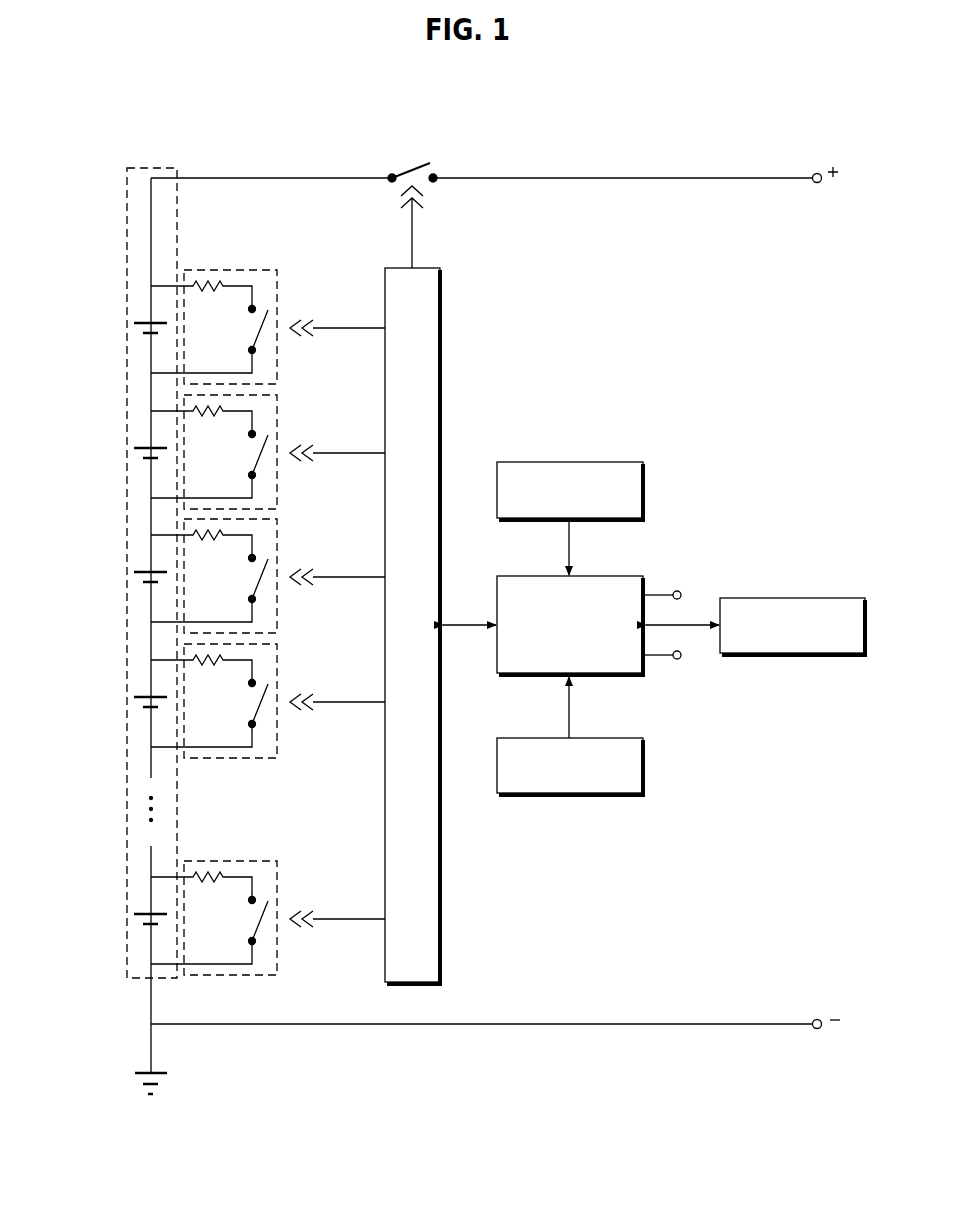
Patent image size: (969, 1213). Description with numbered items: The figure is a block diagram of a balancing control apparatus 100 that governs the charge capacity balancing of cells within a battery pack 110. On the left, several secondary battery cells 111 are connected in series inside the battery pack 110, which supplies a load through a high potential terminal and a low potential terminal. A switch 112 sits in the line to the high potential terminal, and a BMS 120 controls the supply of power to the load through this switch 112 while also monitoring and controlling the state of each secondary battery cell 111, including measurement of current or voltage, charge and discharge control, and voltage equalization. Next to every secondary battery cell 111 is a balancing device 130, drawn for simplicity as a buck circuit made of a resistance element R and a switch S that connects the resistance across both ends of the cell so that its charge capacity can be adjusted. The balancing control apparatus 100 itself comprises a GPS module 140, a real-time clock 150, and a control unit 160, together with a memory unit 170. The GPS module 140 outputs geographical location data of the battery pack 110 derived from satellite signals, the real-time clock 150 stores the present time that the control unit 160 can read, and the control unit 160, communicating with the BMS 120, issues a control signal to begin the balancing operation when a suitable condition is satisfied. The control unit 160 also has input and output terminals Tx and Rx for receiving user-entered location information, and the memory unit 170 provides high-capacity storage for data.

The balancing control apparatus 100 is at (223, 108).
The battery pack 110 is at (160, 166).
The secondary battery cell 111 is at (129, 323).
The switch 112 is at (418, 162).
The BMS 120 is at (442, 291).
The balancing device 130 is at (277, 288).
The GPS module 140 is at (623, 738).
The real-time clock 150 is at (623, 461).
The control unit 160 is at (623, 576).
The memory unit 170 is at (847, 598).